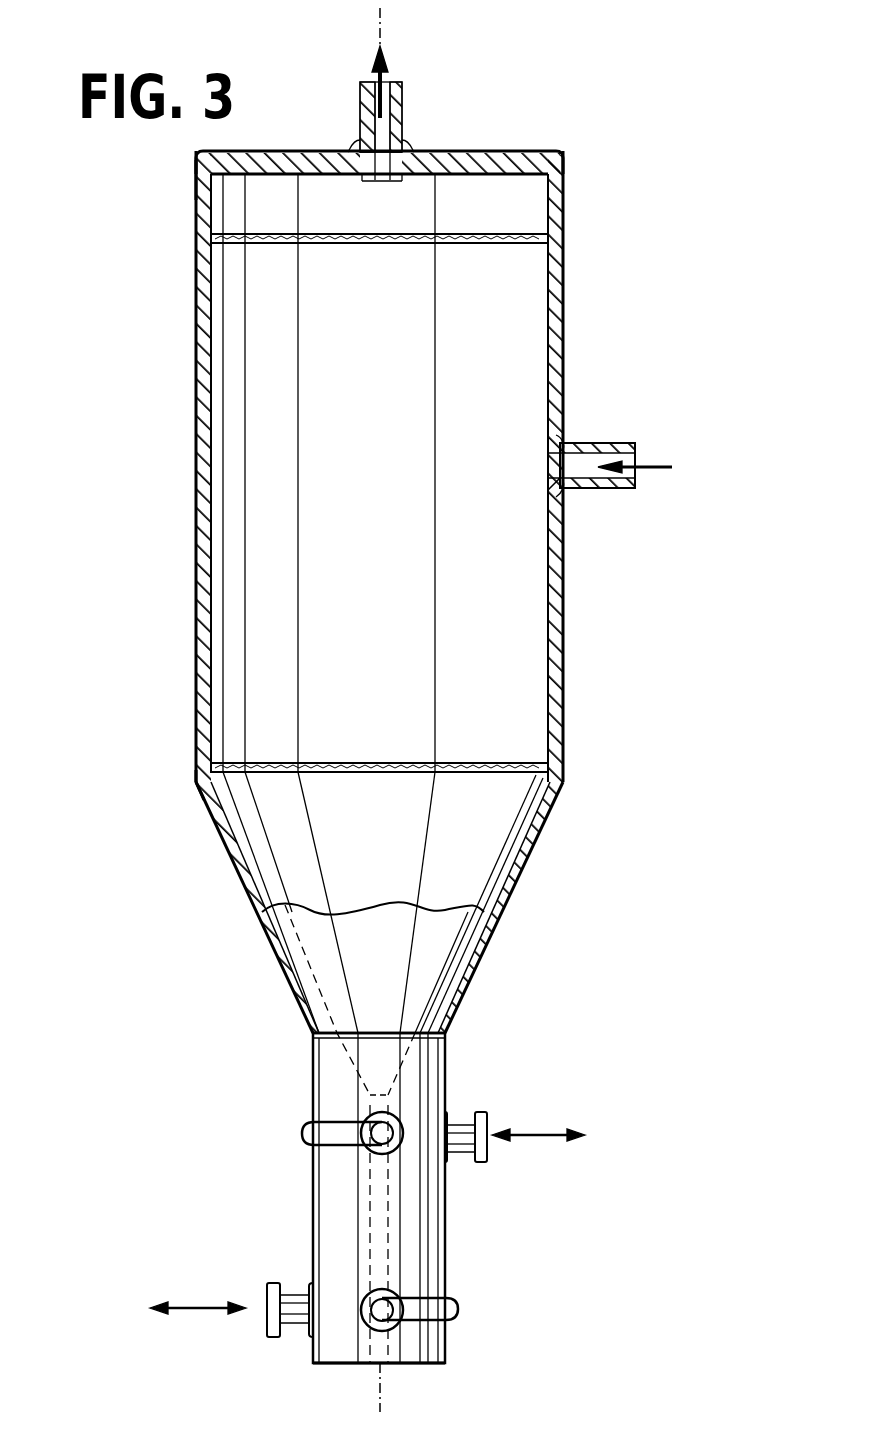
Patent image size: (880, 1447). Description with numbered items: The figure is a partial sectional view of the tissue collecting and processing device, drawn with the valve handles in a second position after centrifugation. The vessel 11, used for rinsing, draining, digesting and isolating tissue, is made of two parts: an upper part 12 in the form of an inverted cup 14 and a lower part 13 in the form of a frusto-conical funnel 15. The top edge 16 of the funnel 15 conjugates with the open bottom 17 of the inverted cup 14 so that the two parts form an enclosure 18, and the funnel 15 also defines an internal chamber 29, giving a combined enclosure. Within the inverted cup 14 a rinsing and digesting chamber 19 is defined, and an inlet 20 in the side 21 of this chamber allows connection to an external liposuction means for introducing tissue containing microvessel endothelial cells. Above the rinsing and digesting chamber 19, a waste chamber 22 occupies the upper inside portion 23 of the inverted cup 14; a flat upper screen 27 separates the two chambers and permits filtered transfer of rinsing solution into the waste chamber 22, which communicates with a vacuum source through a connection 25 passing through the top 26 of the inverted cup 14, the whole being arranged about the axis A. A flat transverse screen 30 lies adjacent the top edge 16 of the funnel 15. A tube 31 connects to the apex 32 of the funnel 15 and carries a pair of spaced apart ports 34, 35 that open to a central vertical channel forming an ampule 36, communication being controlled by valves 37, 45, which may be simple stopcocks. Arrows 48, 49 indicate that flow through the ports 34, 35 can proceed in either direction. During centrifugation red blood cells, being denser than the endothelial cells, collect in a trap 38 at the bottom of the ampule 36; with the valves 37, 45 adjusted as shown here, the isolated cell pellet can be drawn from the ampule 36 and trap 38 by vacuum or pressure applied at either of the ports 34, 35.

The vessel 11 is at (202, 616).
The upper part 12 is at (566, 276).
The lower part 13 is at (520, 856).
The inverted cup 14 is at (200, 208).
The frusto-conical funnel 15 is at (305, 973).
The top edge 16 is at (540, 752).
The open bottom 17 is at (218, 818).
The enclosure 18 is at (394, 511).
The rinsing and digesting chamber 19 is at (538, 580).
The inlet 20 is at (612, 443).
The side 21 is at (553, 432).
The waste chamber 22 is at (503, 202).
The upper inside portion 23 is at (527, 200).
The connection 25 is at (405, 116).
The top 26 is at (282, 150).
The upper screen 27 is at (268, 245).
The internal chamber 29 is at (392, 851).
The flat transverse screen 30 is at (268, 762).
The tube 31 is at (430, 1073).
The apex 32 is at (430, 1028).
The port 34 is at (478, 1162).
The port 35 is at (268, 1338).
The ampule 36 is at (372, 1234).
The valve 37 is at (320, 1135).
The trap 38 is at (445, 1362).
The valve 45 is at (455, 1312).
The arrow 48 is at (530, 1125).
The arrow 49 is at (205, 1292).
The axis A is at (392, 38).